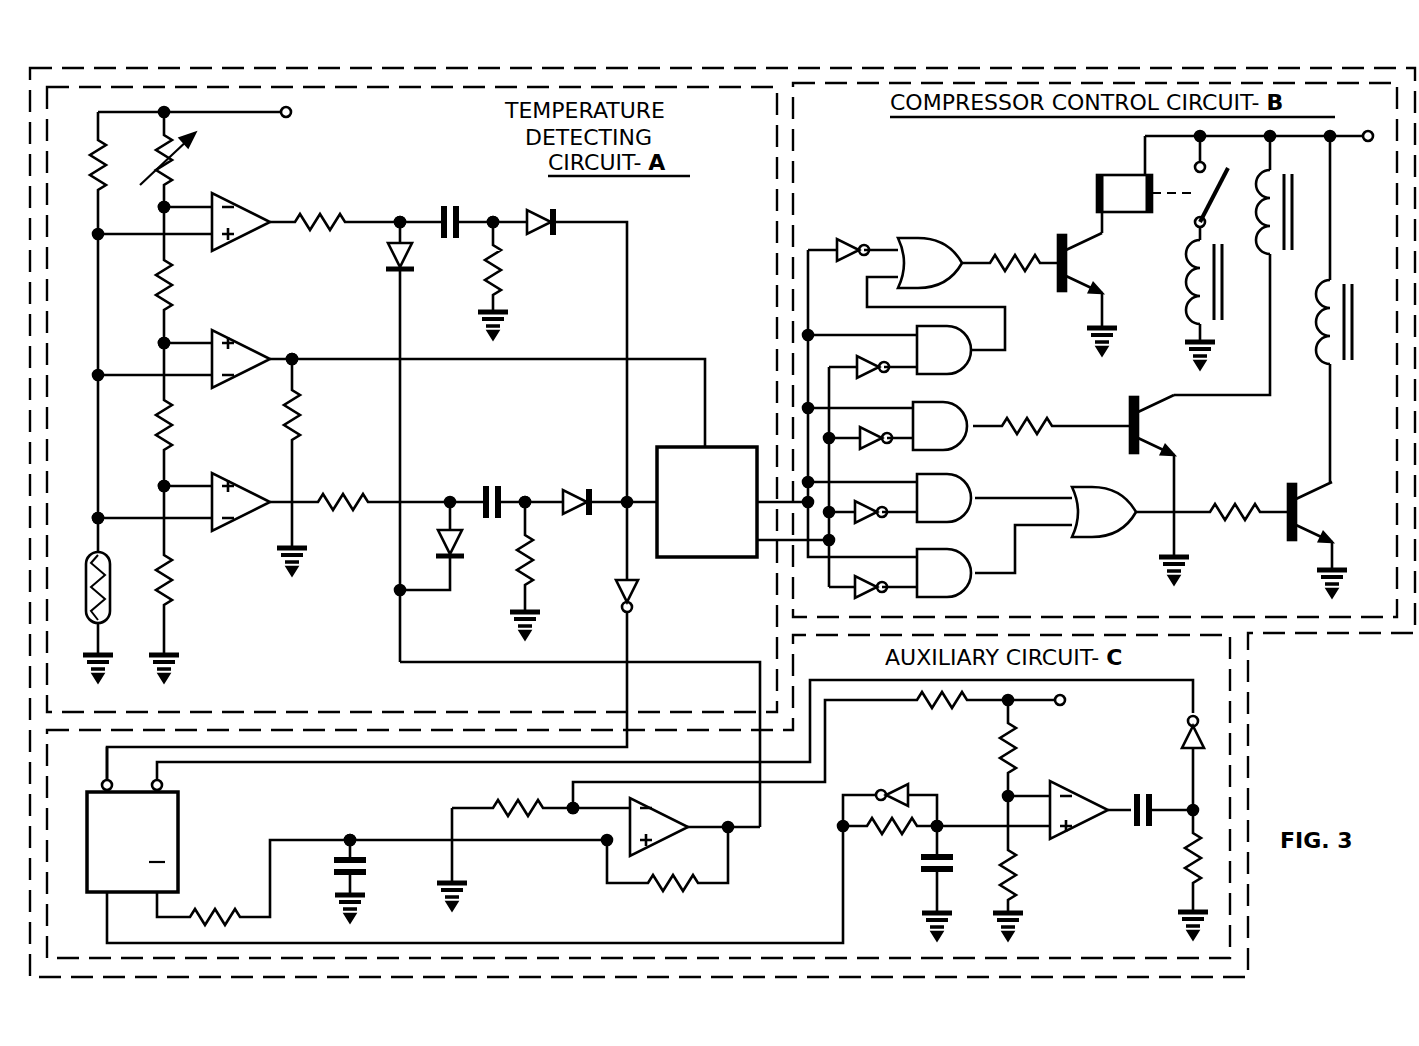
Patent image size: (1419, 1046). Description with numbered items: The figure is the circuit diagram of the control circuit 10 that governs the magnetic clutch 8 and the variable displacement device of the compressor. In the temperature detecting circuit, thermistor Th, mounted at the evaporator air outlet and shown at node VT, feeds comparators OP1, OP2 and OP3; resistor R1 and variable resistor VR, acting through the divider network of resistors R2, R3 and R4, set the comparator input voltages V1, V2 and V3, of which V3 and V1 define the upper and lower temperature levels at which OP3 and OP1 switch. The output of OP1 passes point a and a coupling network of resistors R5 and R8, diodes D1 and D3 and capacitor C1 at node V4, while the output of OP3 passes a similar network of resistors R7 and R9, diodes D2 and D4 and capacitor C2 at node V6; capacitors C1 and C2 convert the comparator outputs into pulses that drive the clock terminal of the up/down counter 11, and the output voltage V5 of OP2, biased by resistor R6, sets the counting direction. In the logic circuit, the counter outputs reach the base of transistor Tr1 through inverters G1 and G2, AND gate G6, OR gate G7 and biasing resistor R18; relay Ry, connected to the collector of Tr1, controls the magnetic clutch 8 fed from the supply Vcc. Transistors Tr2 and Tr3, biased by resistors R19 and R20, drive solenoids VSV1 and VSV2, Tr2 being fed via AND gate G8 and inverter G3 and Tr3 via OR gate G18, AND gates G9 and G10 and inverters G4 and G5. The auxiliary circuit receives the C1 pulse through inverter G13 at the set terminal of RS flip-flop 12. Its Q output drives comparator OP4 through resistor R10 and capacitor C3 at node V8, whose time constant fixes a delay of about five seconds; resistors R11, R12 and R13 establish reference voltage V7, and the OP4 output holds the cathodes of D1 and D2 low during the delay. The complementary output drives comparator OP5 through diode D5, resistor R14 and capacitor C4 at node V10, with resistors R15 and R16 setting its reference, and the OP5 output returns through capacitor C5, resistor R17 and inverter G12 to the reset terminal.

The control circuit 10 is at (1322, 721).
The up/down counter 11 is at (741, 450).
The RS flip-flop 12 is at (178, 806).
The magnetic clutch 8 is at (1192, 288).
The resistor R1 is at (96, 170).
The resistor R2 is at (157, 292).
The resistor R3 is at (157, 422).
The resistor R4 is at (175, 605).
The resistor R5 is at (343, 215).
The resistor R6 is at (300, 414).
The resistor R7 is at (358, 495).
The resistor R8 is at (503, 284).
The resistor R9 is at (534, 558).
The resistor R10 is at (218, 906).
The resistor R11 is at (930, 712).
The resistor R12 is at (513, 803).
The resistor R13 is at (668, 890).
The resistor R14 is at (890, 836).
The resistor R15 is at (1000, 760).
The resistor R16 is at (1013, 866).
The resistor R17 is at (1186, 840).
The resistor R18 is at (1017, 254).
The resistor R19 is at (1024, 422).
The resistor R20 is at (1232, 506).
The variable resistor VR is at (170, 178).
The thermistor Th is at (112, 598).
The relay Ry is at (1130, 188).
The comparator OP1 is at (248, 218).
The comparator OP2 is at (246, 348).
The comparator OP3 is at (240, 484).
The comparator OP4 is at (662, 815).
The comparator OP5 is at (1072, 796).
The reference voltage V1 is at (160, 208).
The voltage node V2 is at (160, 344).
The reference voltage V3 is at (160, 487).
The voltage node V4 is at (493, 214).
The output voltage of comparator OP2 V5 is at (293, 352).
The voltage node V6 is at (525, 495).
The reference voltage V7 is at (572, 816).
The voltage node V8 is at (350, 833).
The voltage node V10 is at (940, 822).
The thermistor voltage node VT is at (93, 520).
The supply voltage terminal Vcc is at (844, 409).
The point a is at (397, 208).
The capacitor C1 is at (458, 204).
The capacitor C2 is at (472, 497).
The capacitor C3 is at (333, 862).
The capacitor C4 is at (930, 873).
The capacitor C5 is at (1138, 800).
The diode D1 is at (388, 250).
The diode D2 is at (462, 548).
The diode D3 is at (556, 211).
The diode D4 is at (578, 490).
The diode D5 is at (898, 790).
The inverter G1 is at (849, 240).
The inverter G2 is at (868, 376).
The inverter G3 is at (870, 447).
The inverter G4 is at (868, 521).
The inverter G5 is at (850, 592).
The AND gate G6 is at (962, 364).
The OR gate G7 is at (942, 244).
The AND gate G8 is at (962, 444).
The AND gate G9 is at (960, 520).
The AND gate G10 is at (968, 588).
The inverter G12 is at (1188, 716).
The inverter G13 is at (642, 600).
The OR gate G18 is at (1095, 540).
The NPN transistor Tr1 is at (1055, 244).
The NPN transistor Tr2 is at (1142, 428).
The NPN transistor Tr3 is at (1300, 512).
The solenoid VSV1 is at (1306, 228).
The solenoid VSV2 is at (1363, 295).